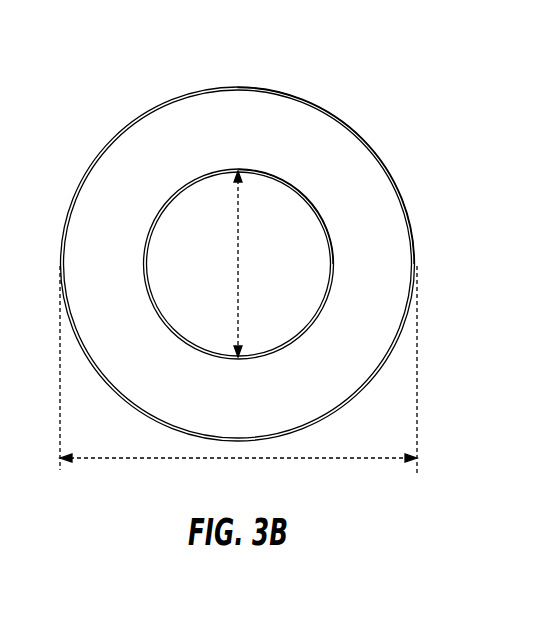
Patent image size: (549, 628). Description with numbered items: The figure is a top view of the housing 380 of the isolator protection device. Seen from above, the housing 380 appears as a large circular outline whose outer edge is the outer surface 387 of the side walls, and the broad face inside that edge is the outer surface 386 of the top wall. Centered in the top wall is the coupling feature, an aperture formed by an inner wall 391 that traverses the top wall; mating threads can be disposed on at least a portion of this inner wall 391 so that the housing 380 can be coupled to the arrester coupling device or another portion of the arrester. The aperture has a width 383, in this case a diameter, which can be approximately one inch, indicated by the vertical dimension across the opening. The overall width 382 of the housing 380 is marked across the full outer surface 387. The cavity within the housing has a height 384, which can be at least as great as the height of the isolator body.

The housing 380 is at (157, 51).
The width 382 is at (196, 460).
The width 383 is at (237, 266).
The height 384 is at (194, 223).
The outer surface 386 is at (238, 100).
The outer surface 387 is at (375, 146).
The inner wall 391 is at (330, 247).